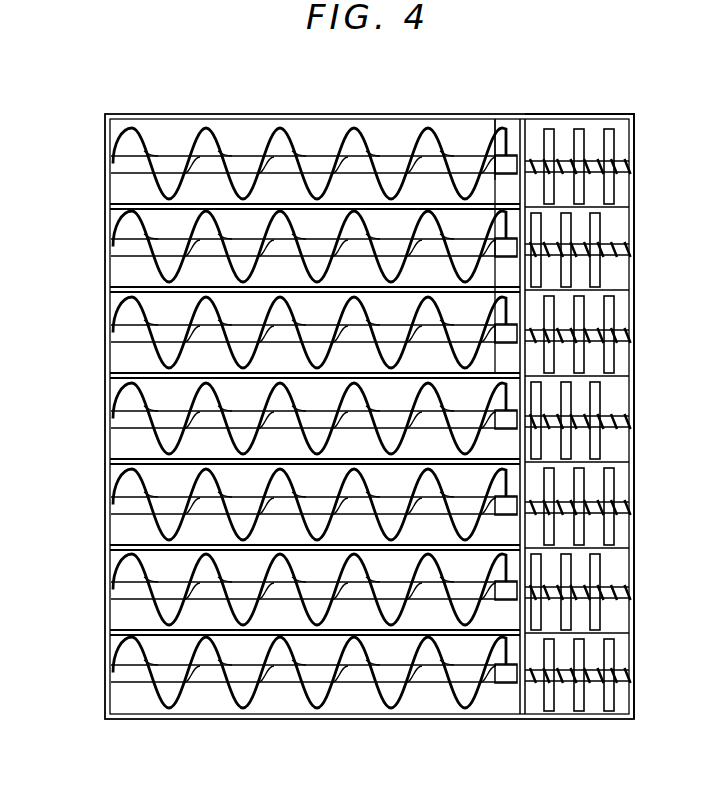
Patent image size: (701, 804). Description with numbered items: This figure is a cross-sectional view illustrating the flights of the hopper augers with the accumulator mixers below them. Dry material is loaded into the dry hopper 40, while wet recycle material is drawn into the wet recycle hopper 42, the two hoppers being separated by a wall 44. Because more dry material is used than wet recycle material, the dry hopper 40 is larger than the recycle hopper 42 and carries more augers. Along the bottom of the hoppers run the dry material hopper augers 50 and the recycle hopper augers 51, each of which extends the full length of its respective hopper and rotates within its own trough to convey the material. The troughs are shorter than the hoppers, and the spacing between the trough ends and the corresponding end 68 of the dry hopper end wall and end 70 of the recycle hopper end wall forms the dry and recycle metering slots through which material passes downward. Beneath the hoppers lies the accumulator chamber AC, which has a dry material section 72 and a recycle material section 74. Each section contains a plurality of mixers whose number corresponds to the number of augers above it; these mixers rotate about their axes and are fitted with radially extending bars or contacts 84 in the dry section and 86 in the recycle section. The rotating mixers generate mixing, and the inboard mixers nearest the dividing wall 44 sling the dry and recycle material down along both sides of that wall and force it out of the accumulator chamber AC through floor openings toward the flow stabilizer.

The dry hopper 40 is at (95, 478).
The wet recycle hopper 42 is at (102, 231).
The wall 44 is at (116, 372).
The dry material hopper auger 50 is at (248, 693).
The recycle hopper auger 51 is at (290, 140).
The dry hopper end wall end 68 is at (520, 702).
The recycle hopper end wall end 70 is at (515, 132).
The dry material section 72 is at (618, 563).
The recycle material section 74 is at (618, 197).
The radially extending bars or contacts 84 is at (610, 652).
The radially extending bars or contacts 86 is at (620, 308).
The accumulator chamber AC is at (577, 108).